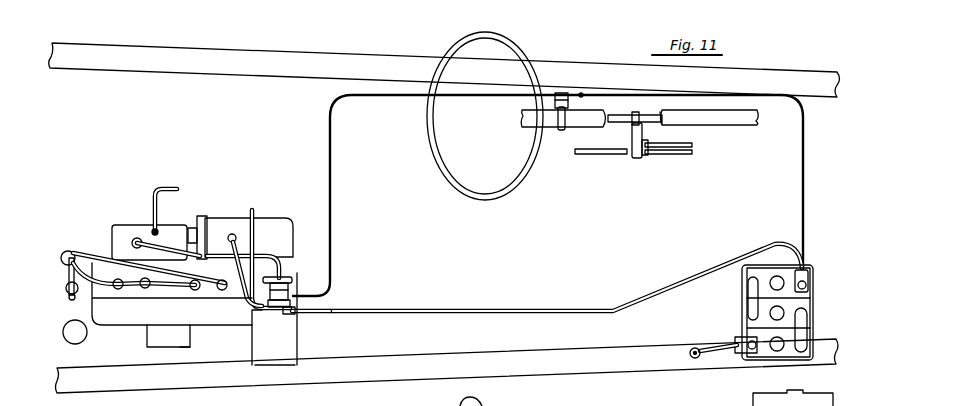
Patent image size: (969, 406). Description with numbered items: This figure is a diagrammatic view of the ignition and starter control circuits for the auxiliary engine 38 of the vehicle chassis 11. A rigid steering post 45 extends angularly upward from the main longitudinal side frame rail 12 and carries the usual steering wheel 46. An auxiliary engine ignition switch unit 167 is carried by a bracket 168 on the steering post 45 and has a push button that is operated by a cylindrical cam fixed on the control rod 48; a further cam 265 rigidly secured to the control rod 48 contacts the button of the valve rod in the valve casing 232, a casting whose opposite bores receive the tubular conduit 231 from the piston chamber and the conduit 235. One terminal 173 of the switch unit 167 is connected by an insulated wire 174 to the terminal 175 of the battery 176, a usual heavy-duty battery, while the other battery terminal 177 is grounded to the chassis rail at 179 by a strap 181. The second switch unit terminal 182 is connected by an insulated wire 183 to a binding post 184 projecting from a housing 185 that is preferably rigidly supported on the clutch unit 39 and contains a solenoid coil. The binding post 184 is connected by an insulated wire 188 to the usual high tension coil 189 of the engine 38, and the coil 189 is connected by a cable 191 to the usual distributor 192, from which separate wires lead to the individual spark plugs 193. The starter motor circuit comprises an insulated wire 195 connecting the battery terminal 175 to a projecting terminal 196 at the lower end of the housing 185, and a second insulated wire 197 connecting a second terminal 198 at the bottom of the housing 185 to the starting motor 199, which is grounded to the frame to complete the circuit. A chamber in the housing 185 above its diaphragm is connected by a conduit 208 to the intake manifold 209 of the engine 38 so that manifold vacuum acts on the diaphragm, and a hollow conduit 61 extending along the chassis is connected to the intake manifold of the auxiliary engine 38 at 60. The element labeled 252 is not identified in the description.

The vehicle chassis 11 is at (443, 365).
The main longitudinal side frame rail 12 is at (268, 60).
The auxiliary engine 38 is at (137, 314).
The clutch unit 39 is at (293, 242).
The steering post 45 is at (758, 124).
The steering wheel 46 is at (515, 56).
The control rod 48 is at (640, 124).
The intake manifold connection 60 is at (152, 228).
The hollow conduit 61 is at (174, 189).
The auxiliary engine ignition switch unit 167 is at (568, 103).
The bracket 168 is at (560, 129).
The switch unit terminal 173 is at (572, 96).
The insulated wire 174 is at (802, 185).
The battery terminal 175 is at (806, 269).
The battery 176 is at (830, 308).
The battery terminal 177 is at (740, 338).
The ground connection 179 is at (694, 359).
The strap 181 is at (719, 356).
The second switch unit terminal 182 is at (560, 92).
The insulated wire 183 is at (400, 97).
The binding post 184 is at (291, 289).
The housing 185 is at (292, 280).
The insulated wire 188 is at (232, 306).
The high tension coil 189 is at (70, 297).
The cable 191 is at (67, 276).
The distributor 192 is at (66, 253).
The spark plugs 193 is at (157, 297).
The insulated wire 195 is at (613, 309).
The projecting terminal 196 is at (298, 311).
The second insulated wire 197 is at (274, 319).
The second terminal 198 is at (292, 315).
The starting motor 199 is at (234, 224).
The conduit 208 is at (266, 249).
The intake manifold 209 is at (120, 232).
The tubular conduit 231 is at (610, 155).
The valve casing 232 is at (637, 159).
The conduit 235 is at (681, 155).
The rod 252 is at (693, 146).
The cam 265 is at (656, 118).